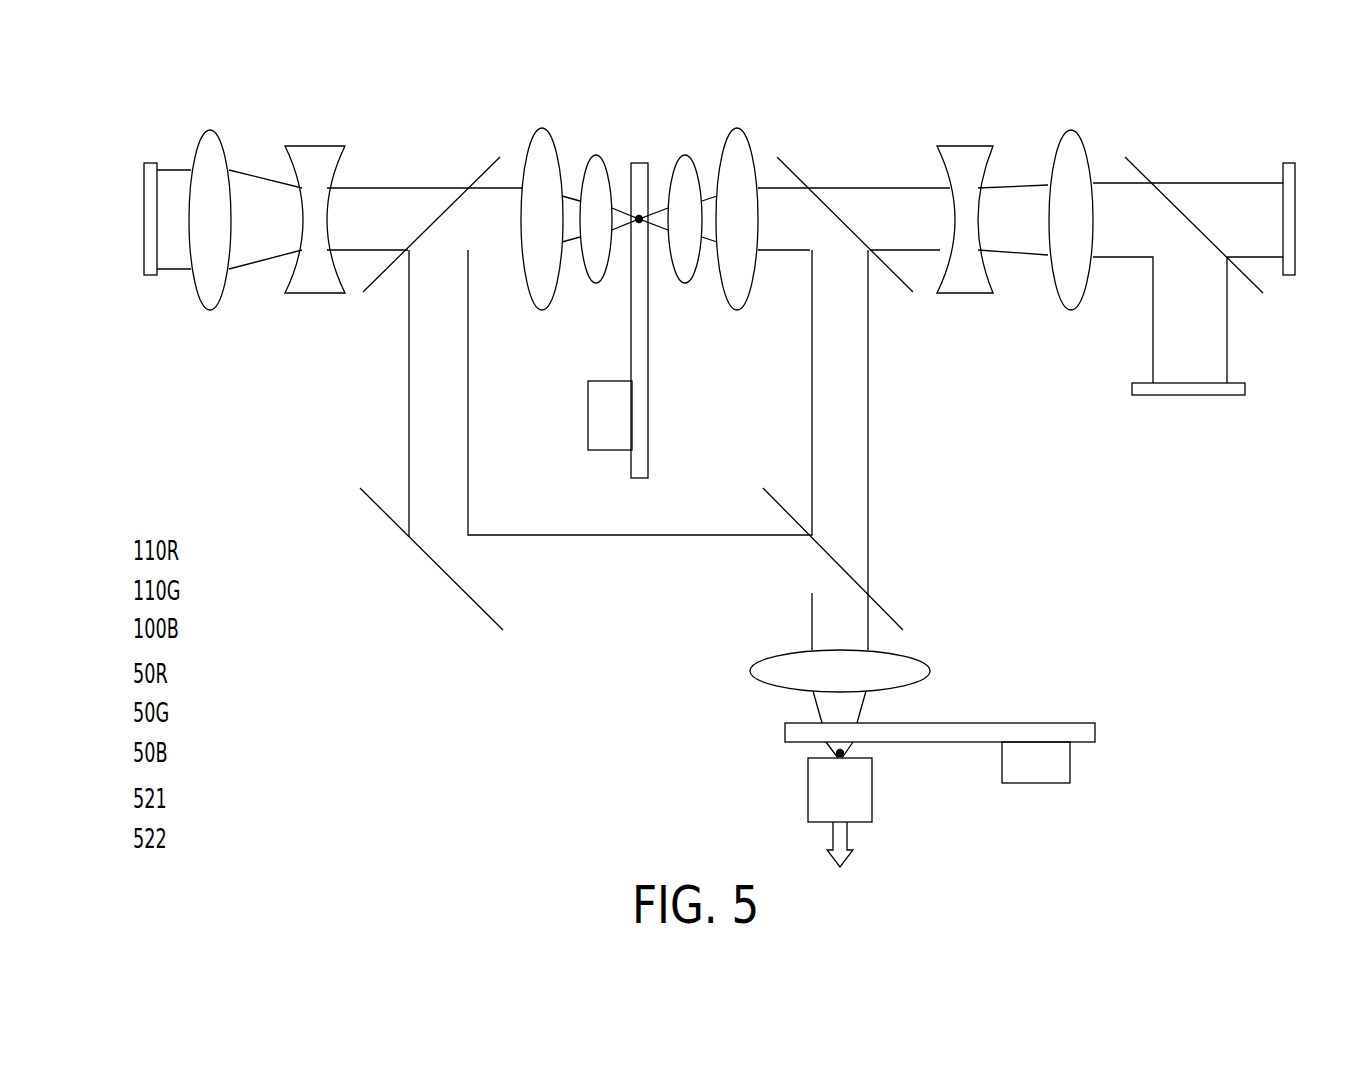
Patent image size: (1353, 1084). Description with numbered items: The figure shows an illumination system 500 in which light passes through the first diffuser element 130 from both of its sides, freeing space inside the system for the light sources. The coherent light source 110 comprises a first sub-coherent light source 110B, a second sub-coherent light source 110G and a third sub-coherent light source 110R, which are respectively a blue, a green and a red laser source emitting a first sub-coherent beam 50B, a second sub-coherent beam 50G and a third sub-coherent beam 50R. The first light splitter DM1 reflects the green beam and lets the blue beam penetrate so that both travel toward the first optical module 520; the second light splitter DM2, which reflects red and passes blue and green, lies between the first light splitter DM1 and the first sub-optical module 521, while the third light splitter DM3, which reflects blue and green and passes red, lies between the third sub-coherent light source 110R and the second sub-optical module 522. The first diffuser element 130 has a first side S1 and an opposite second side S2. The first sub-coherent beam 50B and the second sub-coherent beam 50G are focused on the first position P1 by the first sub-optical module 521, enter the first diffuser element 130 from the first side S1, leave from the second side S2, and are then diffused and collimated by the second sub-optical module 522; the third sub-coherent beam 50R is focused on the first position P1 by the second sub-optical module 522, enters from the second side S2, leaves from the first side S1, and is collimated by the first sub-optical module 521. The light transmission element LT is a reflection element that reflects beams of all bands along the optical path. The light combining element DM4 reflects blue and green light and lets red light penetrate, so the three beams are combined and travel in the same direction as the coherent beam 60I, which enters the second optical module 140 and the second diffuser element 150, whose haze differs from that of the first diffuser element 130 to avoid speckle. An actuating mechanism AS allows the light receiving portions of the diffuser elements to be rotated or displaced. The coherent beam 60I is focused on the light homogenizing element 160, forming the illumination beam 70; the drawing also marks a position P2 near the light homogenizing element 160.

The illumination system 500 is at (1318, 838).
The coherent light source 110 is at (133, 535).
The third sub-coherent light source 110R is at (150, 175).
The second sub-coherent light source 110G is at (1132, 389).
The first sub-coherent light source 110B is at (1288, 175).
The third sub-coherent beam 50R is at (262, 195).
The second sub-coherent beam 50G is at (1165, 336).
The first sub-coherent beam 50B is at (1218, 200).
The coherent beam 60I is at (857, 625).
The first optical module 520 is at (421, 464).
The first sub-optical module 521 is at (737, 157).
The second sub-optical module 522 is at (595, 172).
The first diffuser element 130 is at (642, 162).
The second optical module 140 is at (838, 670).
The second diffuser element 150 is at (980, 730).
The light homogenizing element 160 is at (823, 797).
The illumination beam 70 is at (847, 837).
The first light splitter DM1 is at (1128, 160).
The second light splitter DM2 is at (795, 175).
The third light splitter DM3 is at (485, 172).
The light combining element DM4 is at (893, 612).
The light transmission element LT is at (487, 617).
The actuating mechanism AS is at (607, 418).
The first position P1 is at (640, 217).
The second focal point P2 is at (850, 750).
The first side S1 is at (648, 340).
The second side S2 is at (621, 345).